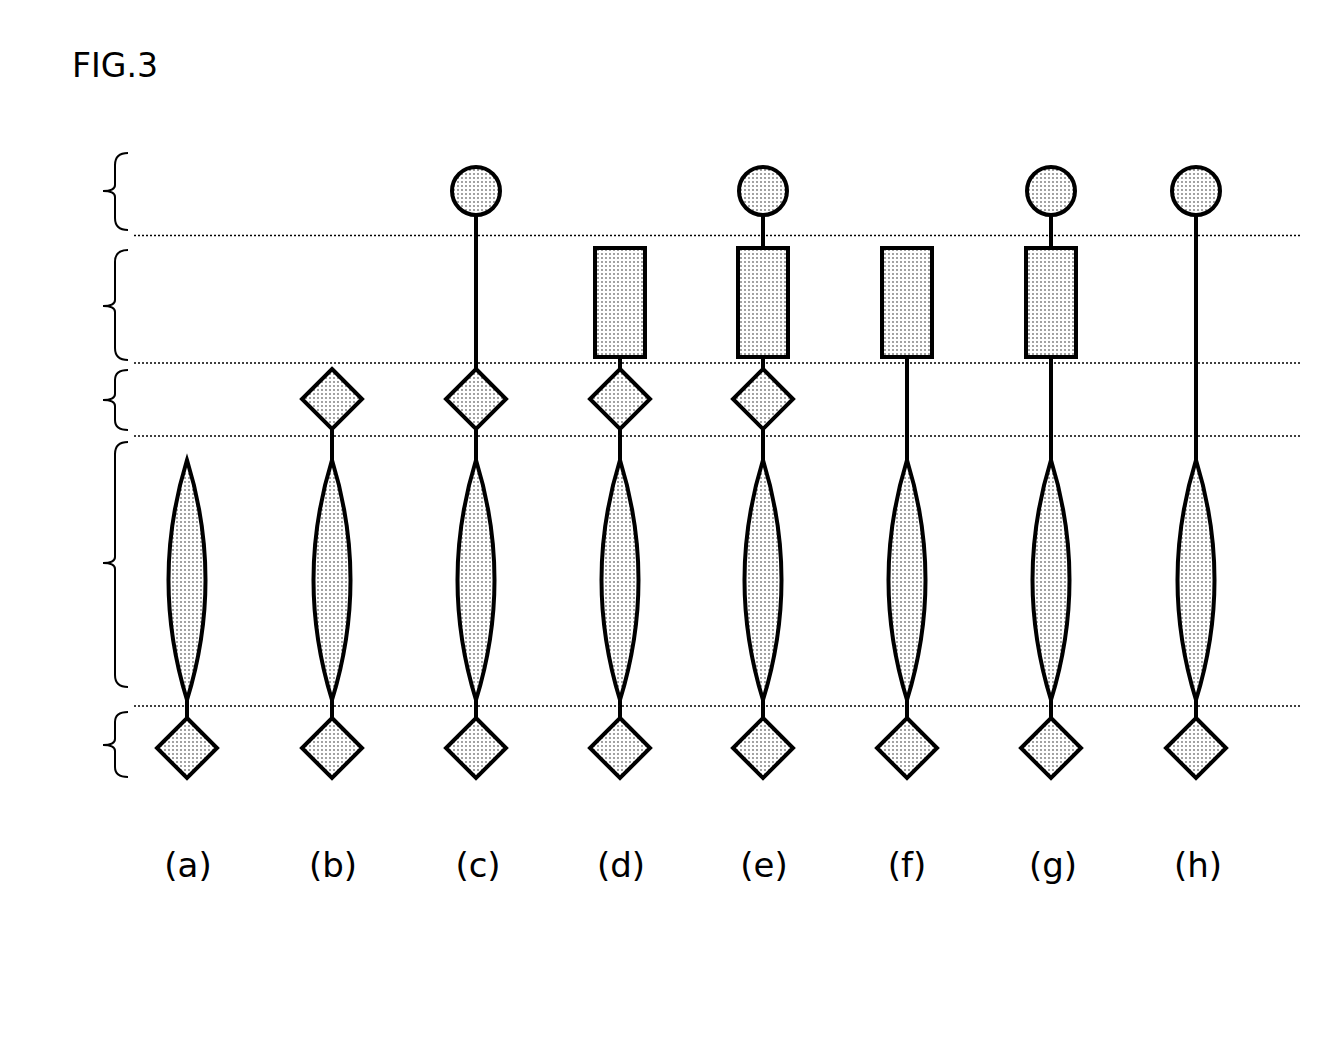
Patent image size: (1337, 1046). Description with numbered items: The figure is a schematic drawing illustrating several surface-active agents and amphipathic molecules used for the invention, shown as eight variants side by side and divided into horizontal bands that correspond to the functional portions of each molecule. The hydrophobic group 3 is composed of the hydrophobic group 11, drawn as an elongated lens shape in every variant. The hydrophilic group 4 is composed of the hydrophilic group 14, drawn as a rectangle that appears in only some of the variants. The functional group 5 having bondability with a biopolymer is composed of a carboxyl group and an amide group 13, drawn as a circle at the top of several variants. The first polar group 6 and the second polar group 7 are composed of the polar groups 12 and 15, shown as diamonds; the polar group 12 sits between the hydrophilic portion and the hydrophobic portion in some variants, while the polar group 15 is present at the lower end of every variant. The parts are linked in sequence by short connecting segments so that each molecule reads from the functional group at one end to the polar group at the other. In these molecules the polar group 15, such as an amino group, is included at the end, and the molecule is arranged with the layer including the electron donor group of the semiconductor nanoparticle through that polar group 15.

The hydrophobic group 3 is at (680, 574).
The hydrophilic group 4 is at (680, 306).
The functional group having bondability with a biopolymer 5 is at (680, 194).
The first polar group 6 is at (680, 403).
The second polar group 7 is at (93, 744).
The hydrophobic group 11 is at (201, 590).
The polar group 12 is at (342, 390).
The carboxyl group and amide group 13 is at (492, 197).
The hydrophilic group 14 is at (637, 273).
The polar group 15 is at (207, 752).